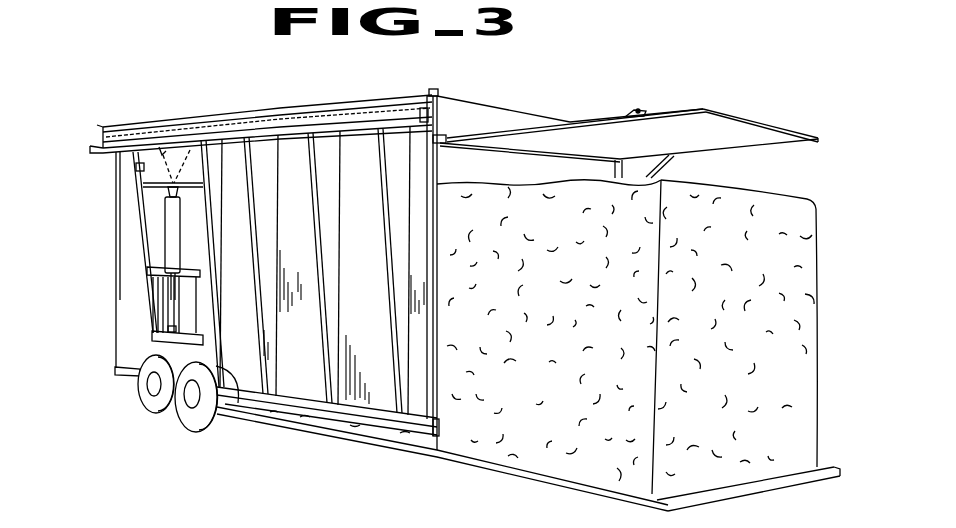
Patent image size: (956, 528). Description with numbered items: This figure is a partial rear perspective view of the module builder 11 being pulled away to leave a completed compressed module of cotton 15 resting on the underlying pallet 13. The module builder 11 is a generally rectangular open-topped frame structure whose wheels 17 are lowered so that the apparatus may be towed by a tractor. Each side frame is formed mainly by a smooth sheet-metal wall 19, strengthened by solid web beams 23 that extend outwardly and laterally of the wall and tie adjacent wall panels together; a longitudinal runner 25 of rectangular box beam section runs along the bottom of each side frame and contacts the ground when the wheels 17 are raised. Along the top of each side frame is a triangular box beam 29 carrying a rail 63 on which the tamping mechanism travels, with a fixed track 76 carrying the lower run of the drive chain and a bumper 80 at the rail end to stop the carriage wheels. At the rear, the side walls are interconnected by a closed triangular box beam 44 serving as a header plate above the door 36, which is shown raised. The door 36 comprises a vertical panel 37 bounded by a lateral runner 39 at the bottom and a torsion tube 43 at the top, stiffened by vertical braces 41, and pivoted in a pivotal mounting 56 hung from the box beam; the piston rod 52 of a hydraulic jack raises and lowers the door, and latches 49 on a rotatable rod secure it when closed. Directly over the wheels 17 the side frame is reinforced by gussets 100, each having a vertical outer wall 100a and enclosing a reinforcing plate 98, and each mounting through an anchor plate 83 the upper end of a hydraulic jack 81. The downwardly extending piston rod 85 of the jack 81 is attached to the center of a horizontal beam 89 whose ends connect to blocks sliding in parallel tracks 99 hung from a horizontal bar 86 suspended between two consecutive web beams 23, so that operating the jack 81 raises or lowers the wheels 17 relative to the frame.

The module builder 11 is at (96, 100).
The pallet 13 is at (521, 475).
The compressed module of cotton 15 is at (553, 309).
The wheels 17 is at (190, 420).
The side wall 19 is at (124, 281).
The web beam 23 is at (140, 243).
The longitudinal runner 25 is at (117, 377).
The triangular box beam 29 is at (103, 132).
The rear door 36 is at (738, 114).
The vertical panel 37 is at (748, 147).
The lateral runner 39 is at (781, 127).
The vertical braces 41 is at (498, 132).
The torsion tube 43 is at (601, 158).
The closed triangular box beam 44 is at (512, 109).
The latches 49 is at (629, 109).
The piston rod 52 is at (666, 165).
The pivotal mounting 56 is at (443, 140).
The rails 63 is at (251, 110).
The fixed track 76 is at (90, 148).
The bumpers 80 is at (437, 82).
The hydraulic jack 81 is at (165, 212).
The anchor plate 83 is at (143, 184).
The piston rod 85 is at (173, 316).
The horizontal bar 86 is at (147, 270).
The horizontal beam 89 is at (155, 340).
The reinforcing plate 98 is at (157, 150).
The parallel tracks 99 is at (157, 299).
The gussets 100 is at (182, 151).
The outer wall of gusset 100a is at (143, 167).